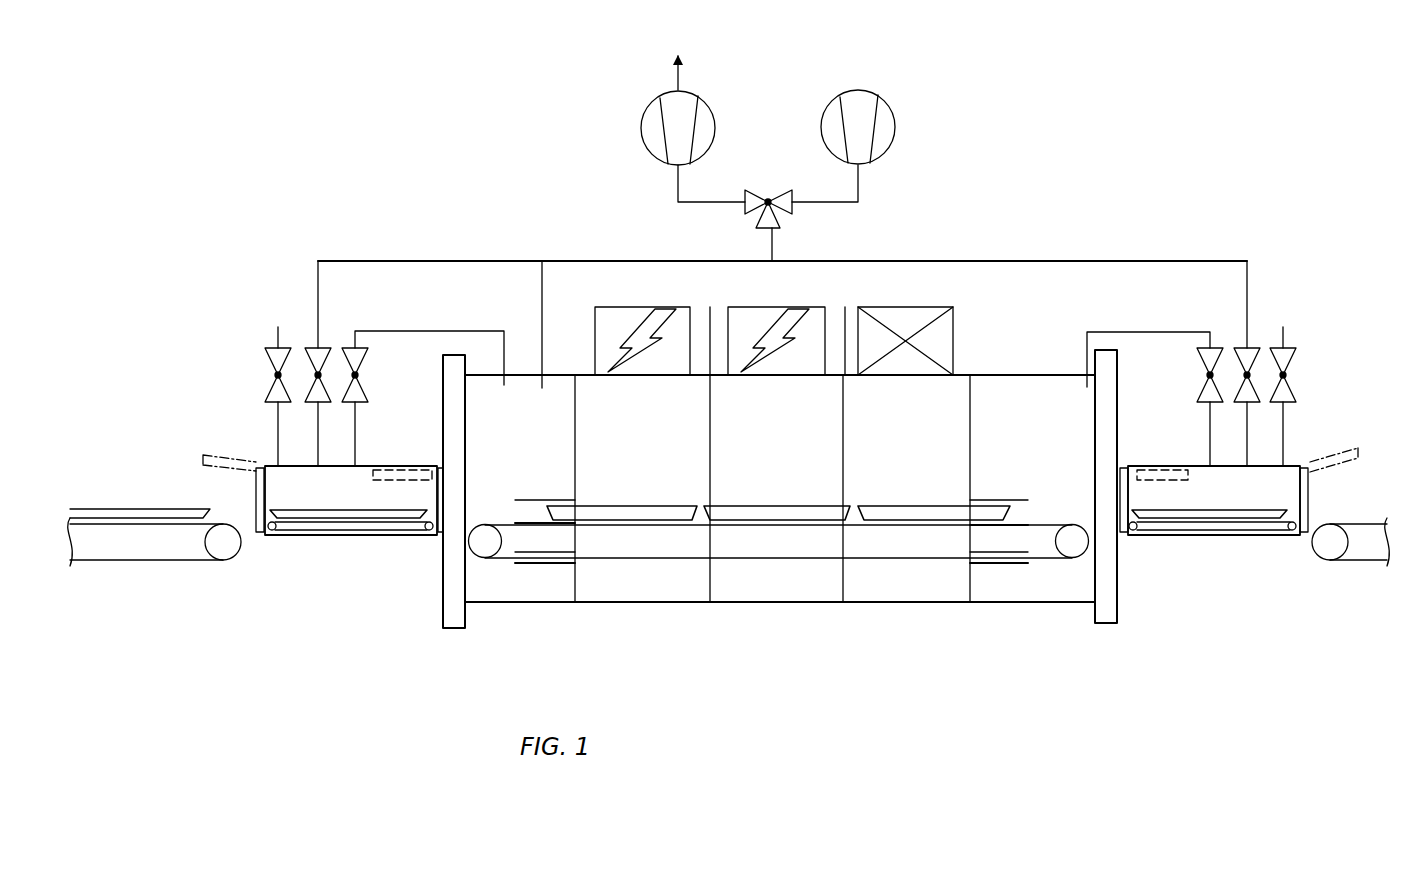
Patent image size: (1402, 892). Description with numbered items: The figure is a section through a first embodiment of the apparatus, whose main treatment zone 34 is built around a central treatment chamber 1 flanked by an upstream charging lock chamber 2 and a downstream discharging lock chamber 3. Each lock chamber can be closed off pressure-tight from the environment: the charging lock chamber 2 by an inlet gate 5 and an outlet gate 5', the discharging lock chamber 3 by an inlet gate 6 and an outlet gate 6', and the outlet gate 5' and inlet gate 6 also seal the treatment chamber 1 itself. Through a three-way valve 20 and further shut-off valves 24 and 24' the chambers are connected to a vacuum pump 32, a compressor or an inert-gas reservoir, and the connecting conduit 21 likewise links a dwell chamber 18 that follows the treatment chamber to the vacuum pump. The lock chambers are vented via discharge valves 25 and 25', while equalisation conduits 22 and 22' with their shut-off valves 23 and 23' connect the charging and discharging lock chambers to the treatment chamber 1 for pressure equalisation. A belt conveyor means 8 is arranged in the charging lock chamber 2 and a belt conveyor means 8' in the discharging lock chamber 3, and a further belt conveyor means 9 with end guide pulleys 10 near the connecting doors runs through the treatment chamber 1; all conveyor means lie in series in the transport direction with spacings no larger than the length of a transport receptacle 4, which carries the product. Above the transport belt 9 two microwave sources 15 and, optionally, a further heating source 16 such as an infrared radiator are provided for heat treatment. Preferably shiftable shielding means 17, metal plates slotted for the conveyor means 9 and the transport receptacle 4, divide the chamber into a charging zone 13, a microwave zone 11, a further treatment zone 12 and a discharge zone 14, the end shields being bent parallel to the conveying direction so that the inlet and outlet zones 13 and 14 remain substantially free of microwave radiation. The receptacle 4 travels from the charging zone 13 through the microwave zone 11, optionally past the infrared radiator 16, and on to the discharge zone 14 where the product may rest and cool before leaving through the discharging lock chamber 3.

The central treatment chamber 1 is at (830, 622).
The charging lock chamber 2 is at (298, 557).
The discharging lock chamber 3 is at (1238, 553).
The transport receptacle 4 is at (332, 515).
The inlet gate 5 is at (233, 467).
The outlet gate 5' is at (416, 468).
The inlet gate 6 is at (1134, 463).
The outlet gate 6' is at (1329, 463).
The conveyor means 8 is at (350, 555).
The conveyor means 8' is at (1212, 568).
The conveyor means 9 is at (667, 558).
The end guide pulleys 10 is at (485, 558).
The microwave zone 11 is at (630, 440).
The treatment zone 12 is at (930, 420).
The charging zone 13 is at (508, 437).
The discharge zone 14 is at (1057, 477).
The microwave sources 15 is at (678, 332).
The further heating source 16 is at (903, 322).
The shielding means 17 is at (573, 460).
The dwell chamber 18 is at (1072, 558).
The three-way valve 20 is at (768, 195).
The connecting conduit 21 is at (1050, 259).
The equalisation conduit 22 is at (429, 330).
The equalisation conduit 22' is at (1148, 331).
The shut-off valve 23 is at (351, 370).
The shut-off valve 23' is at (1208, 370).
The shut-off valve 24 is at (301, 377).
The shut-off valve 24' is at (1269, 370).
The discharge valve 25 is at (251, 377).
The discharge valve 25' is at (1312, 379).
The vacuum pump 32 is at (768, 91).
The main treatment zone 34 is at (1040, 133).